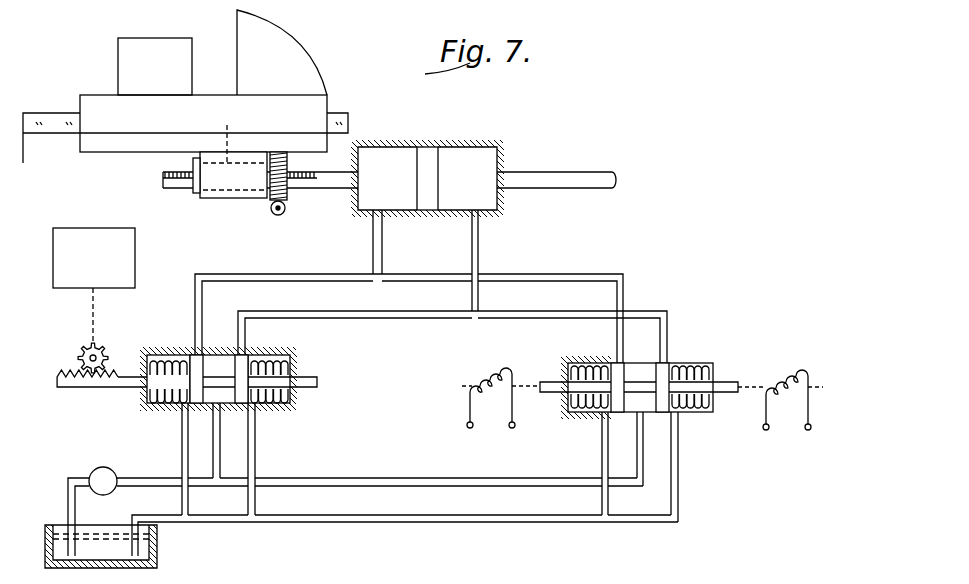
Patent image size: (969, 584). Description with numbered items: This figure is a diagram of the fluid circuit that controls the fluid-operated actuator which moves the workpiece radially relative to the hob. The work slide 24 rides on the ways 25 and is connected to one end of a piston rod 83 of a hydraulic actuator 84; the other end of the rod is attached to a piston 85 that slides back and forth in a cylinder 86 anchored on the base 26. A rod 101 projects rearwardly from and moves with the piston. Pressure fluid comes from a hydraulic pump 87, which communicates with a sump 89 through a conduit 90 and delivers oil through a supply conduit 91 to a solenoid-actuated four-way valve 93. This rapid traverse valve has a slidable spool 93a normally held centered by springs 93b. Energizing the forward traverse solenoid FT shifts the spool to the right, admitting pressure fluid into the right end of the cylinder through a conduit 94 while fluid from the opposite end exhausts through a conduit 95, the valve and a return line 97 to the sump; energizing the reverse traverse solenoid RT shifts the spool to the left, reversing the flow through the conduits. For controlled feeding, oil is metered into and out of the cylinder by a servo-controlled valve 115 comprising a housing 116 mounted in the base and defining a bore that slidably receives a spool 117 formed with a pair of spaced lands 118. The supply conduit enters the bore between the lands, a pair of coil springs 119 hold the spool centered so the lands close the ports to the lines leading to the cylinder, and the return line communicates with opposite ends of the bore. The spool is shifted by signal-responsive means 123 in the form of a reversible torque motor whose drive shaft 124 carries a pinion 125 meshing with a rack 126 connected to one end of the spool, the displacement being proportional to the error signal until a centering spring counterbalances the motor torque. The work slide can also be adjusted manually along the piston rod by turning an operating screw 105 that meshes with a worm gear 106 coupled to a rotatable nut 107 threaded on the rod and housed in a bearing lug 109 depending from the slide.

The work slide 24 is at (98, 101).
The ways 25 is at (53, 116).
The base 26 is at (447, 213).
The piston rod 83 is at (333, 178).
The hydraulic actuator 84 is at (508, 158).
The piston 85 is at (426, 152).
The cylinder 86 is at (478, 153).
The hydraulic pump 87 is at (98, 467).
The sump 89 is at (157, 544).
The conduit 90 is at (68, 500).
The supply conduit 91 is at (404, 460).
The solenoid-actuated four-way valve 93 is at (682, 345).
The valve spool 93a is at (638, 382).
The springs 93b is at (589, 405).
The conduit 94 is at (647, 313).
The conduit 95 is at (572, 280).
The return line 97 is at (473, 523).
The rod 101 is at (572, 187).
The operating screw 105 is at (284, 214).
The worm gear 106 is at (281, 152).
The rotatable nut 107 is at (227, 125).
The bearing lug 109 is at (240, 196).
The servo-controlled valve 115 is at (297, 352).
The housing 116 is at (290, 398).
The spool 117 is at (217, 380).
The lands 118 is at (197, 405).
The coil springs 119 is at (163, 357).
The signal-responsive means 123 is at (110, 228).
The drive shaft 124 is at (93, 308).
The pinion 125 is at (80, 348).
The rack 126 is at (57, 375).
The forward traverse solenoid FT is at (492, 380).
The reverse traverse solenoid RT is at (785, 382).